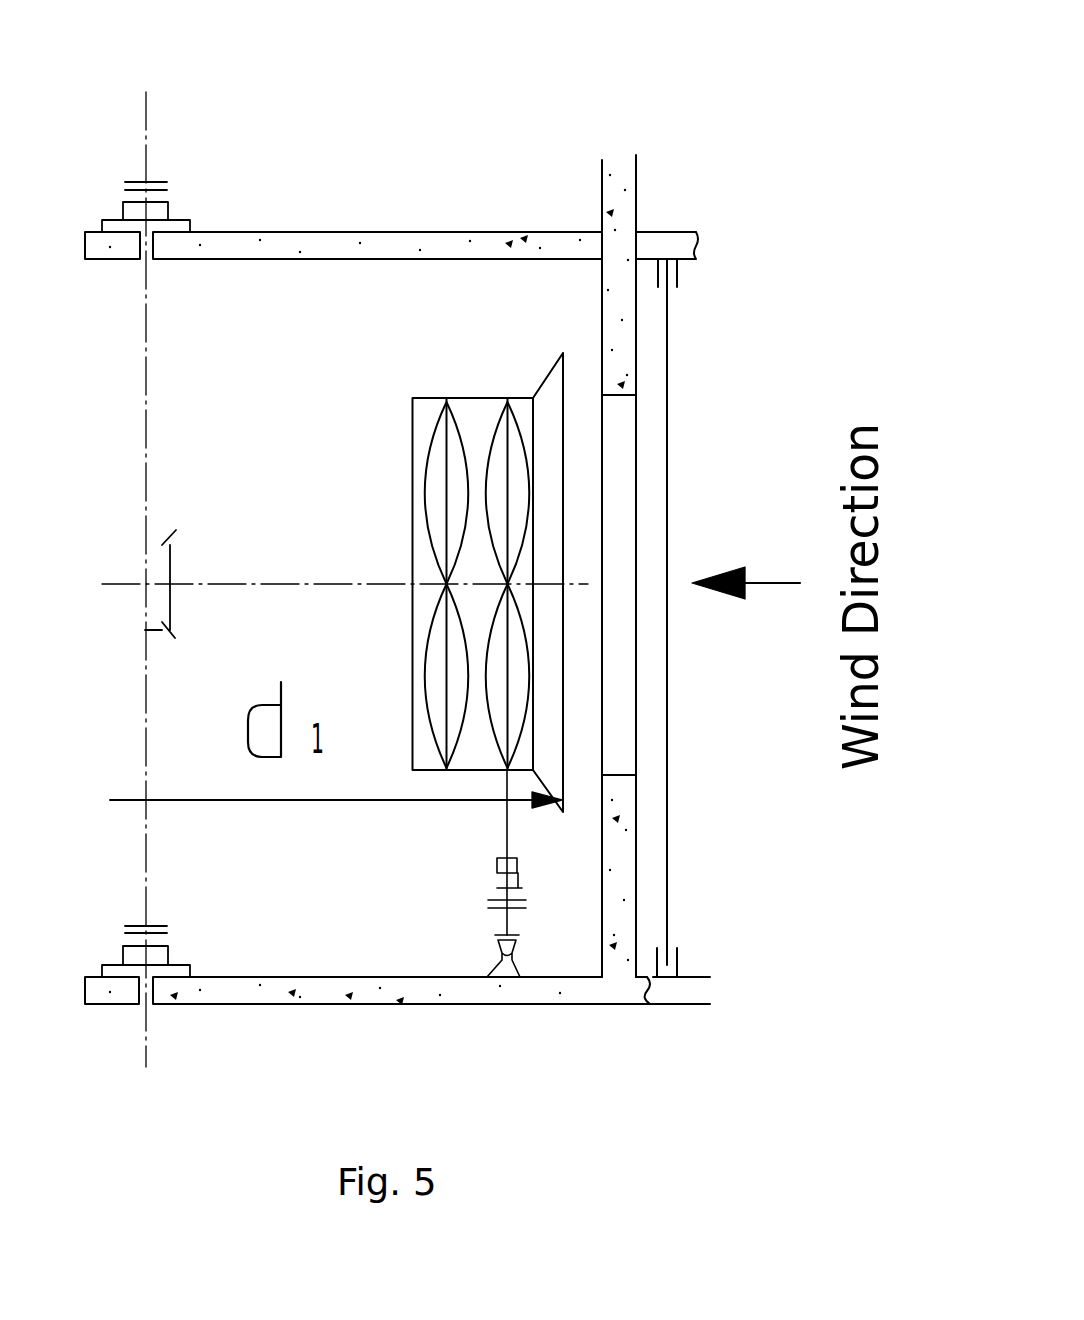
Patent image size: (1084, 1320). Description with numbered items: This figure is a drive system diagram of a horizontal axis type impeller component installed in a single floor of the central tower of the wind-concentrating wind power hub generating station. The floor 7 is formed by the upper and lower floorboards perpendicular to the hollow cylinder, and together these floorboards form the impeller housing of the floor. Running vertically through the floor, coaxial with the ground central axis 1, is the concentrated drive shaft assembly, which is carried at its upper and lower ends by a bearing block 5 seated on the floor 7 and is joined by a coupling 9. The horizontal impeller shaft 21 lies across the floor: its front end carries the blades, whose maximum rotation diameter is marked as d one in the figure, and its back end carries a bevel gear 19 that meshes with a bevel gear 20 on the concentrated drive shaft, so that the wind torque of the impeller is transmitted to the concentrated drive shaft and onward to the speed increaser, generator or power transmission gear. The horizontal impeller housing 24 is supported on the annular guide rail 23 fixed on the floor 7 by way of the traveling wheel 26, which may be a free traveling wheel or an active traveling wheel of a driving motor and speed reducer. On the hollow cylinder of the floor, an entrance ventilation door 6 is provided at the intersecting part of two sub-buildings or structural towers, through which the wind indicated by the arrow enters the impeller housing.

The central axis 1 is at (148, 103).
The bearing block 5 is at (175, 227).
The entrance ventilation door 6 is at (668, 873).
The floor 7 is at (248, 250).
The coupling 9 is at (153, 180).
The bevel gear 19 is at (172, 533).
The bevel gear 20 is at (168, 628).
The horizontal impeller shaft 21 is at (283, 582).
The annular guide rail on the tower floor 23 is at (502, 970).
The horizontal impeller housing 24 is at (548, 403).
The free traveling wheel or active traveling wheel of driving motor and speed reduce 26 is at (495, 888).